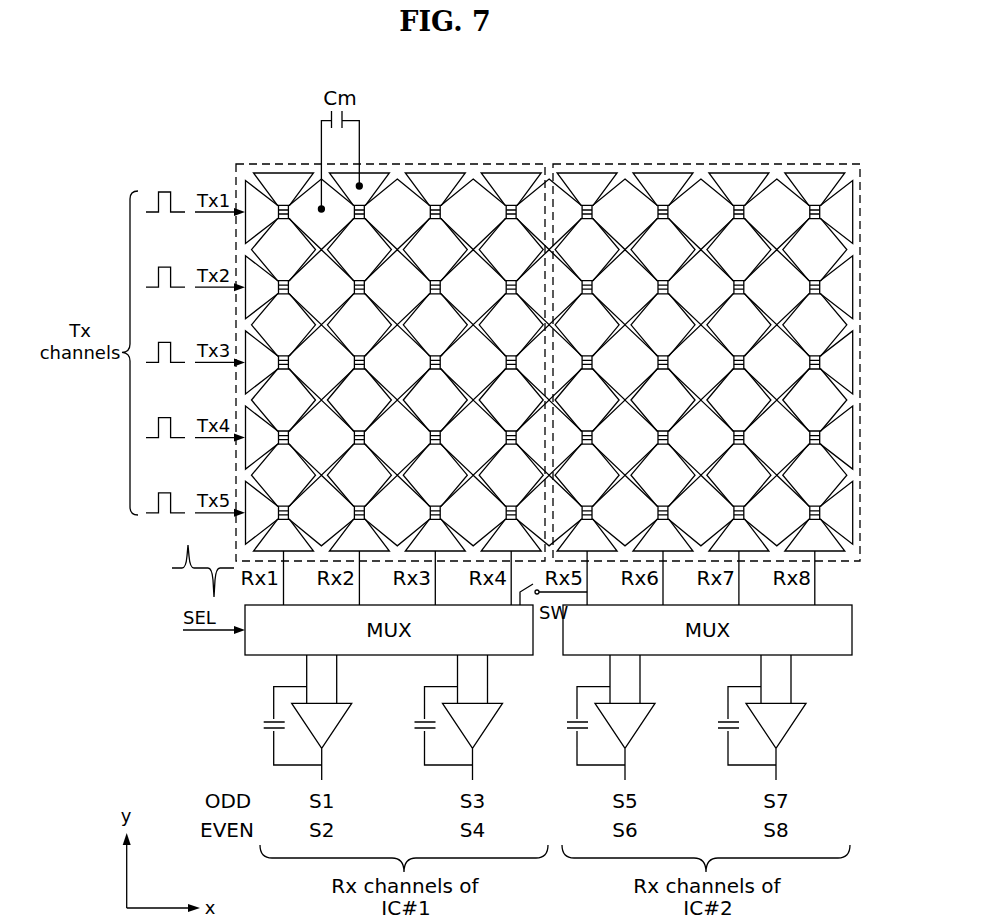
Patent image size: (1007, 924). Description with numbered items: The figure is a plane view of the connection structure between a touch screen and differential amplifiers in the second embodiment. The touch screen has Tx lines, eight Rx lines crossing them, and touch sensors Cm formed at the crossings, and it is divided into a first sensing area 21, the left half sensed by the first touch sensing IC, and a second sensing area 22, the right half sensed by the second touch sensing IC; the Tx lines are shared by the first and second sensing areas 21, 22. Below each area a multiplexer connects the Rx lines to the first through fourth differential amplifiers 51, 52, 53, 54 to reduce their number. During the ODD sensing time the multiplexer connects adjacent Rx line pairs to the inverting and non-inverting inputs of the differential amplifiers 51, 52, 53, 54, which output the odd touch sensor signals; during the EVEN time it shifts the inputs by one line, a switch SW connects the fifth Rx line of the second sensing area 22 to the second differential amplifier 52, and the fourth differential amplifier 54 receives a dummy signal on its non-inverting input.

The first sensing area 21 is at (452, 163).
The second sensing area 22 is at (655, 163).
The first differential amplifier 51 is at (337, 727).
The second differential amplifier 52 is at (488, 727).
The third differential amplifier 53 is at (640, 727).
The fourth differential amplifier 54 is at (791, 727).